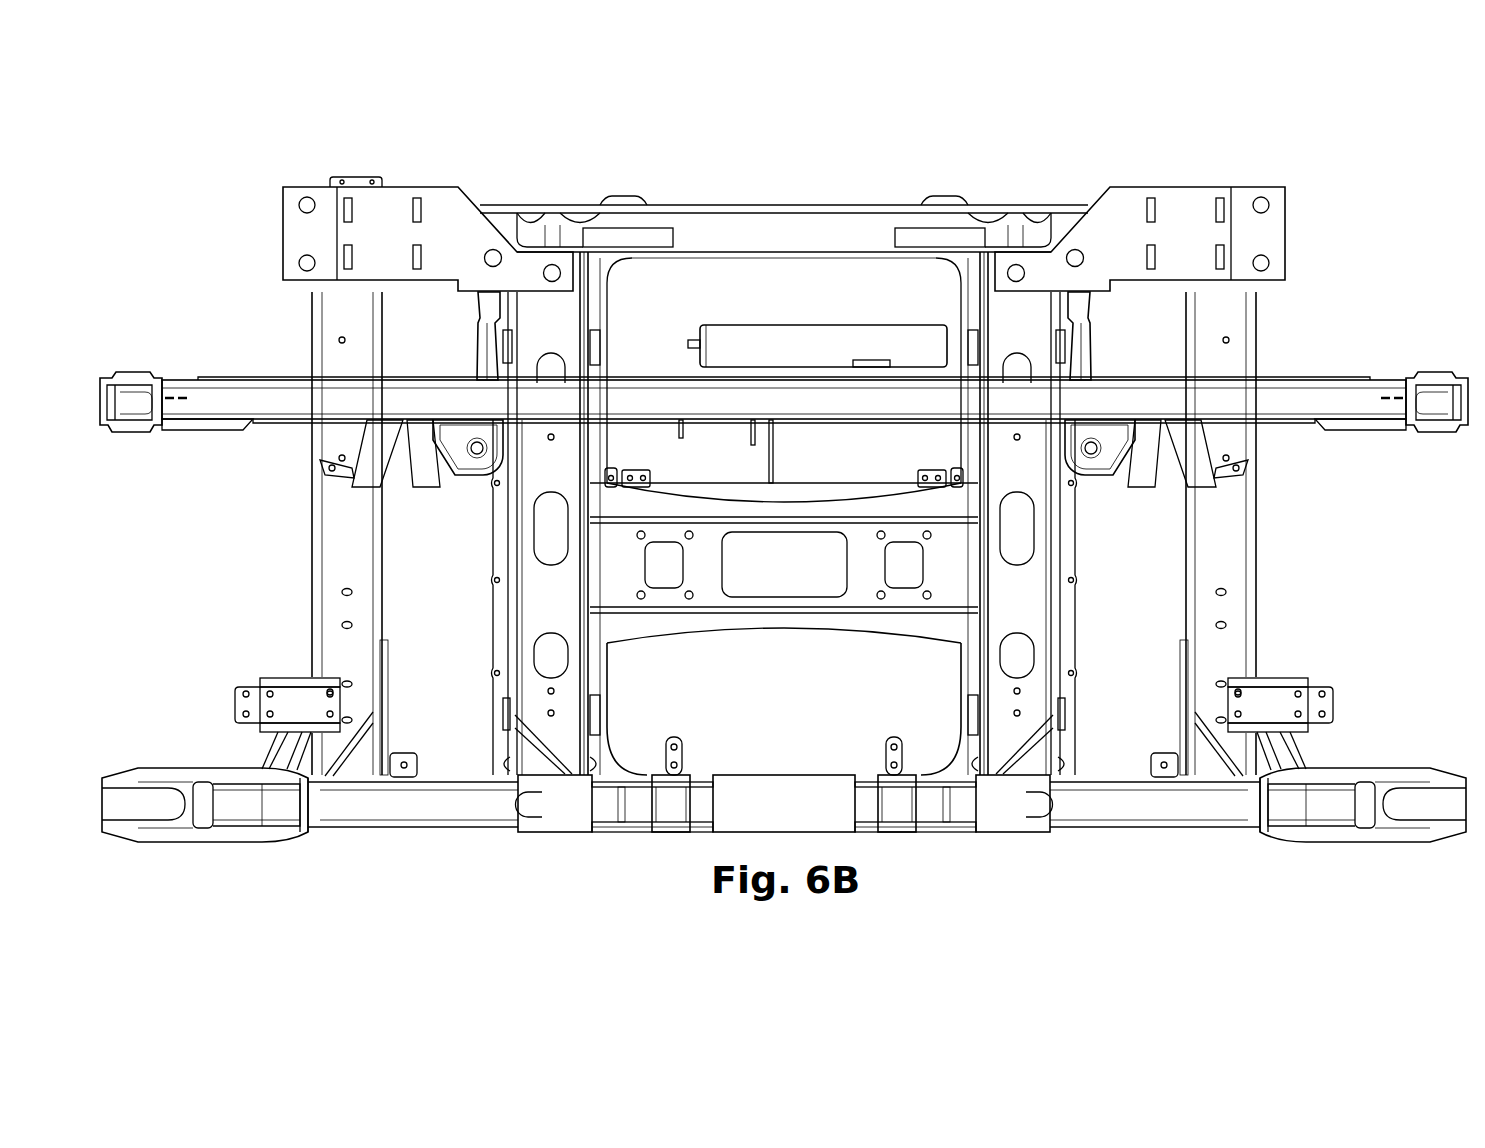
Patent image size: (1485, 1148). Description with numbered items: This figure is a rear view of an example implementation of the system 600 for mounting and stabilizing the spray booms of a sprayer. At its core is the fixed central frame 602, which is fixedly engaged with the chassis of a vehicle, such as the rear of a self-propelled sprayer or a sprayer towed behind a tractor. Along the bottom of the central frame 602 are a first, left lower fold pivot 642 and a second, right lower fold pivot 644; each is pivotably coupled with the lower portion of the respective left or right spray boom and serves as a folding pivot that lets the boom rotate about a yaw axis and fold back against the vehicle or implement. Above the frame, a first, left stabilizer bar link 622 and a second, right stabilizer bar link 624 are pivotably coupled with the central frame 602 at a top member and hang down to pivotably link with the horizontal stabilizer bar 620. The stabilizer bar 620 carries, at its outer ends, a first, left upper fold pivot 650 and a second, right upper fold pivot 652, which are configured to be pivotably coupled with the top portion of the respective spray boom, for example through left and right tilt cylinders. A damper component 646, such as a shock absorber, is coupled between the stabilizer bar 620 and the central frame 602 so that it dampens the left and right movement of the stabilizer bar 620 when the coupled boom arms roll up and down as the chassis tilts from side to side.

The system 600 is at (230, 154).
The central frame 602 is at (992, 838).
The stabilizer bar 620 is at (228, 372).
The first/left stabilizer bar link 622 is at (475, 341).
The second/right stabilizer bar link 624 is at (1094, 330).
The first/left lower fold pivot 642 is at (122, 847).
The second/right lower fold pivot 644 is at (1452, 764).
The damper component 646 is at (787, 331).
The first/left upper fold pivot 650 is at (122, 364).
The second/right upper fold pivot 652 is at (1421, 364).